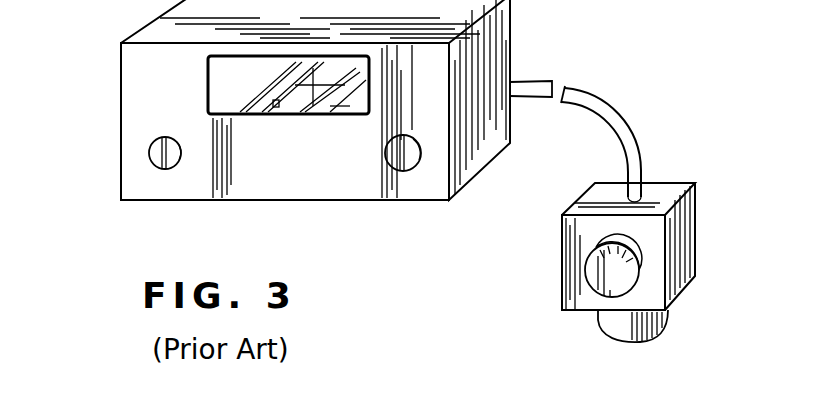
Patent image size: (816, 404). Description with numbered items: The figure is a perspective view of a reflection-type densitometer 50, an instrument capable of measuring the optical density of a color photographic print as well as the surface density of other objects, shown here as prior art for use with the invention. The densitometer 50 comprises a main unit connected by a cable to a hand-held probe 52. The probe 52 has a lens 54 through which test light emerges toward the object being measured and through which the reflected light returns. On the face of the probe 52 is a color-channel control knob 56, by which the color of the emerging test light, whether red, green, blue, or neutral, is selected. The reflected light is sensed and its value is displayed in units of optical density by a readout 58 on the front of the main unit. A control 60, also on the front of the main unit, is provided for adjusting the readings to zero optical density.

The reflection-type densitometer 50 is at (65, 94).
The probe 52 is at (698, 214).
The lens 54 is at (660, 338).
The color-channel control knob 56 is at (583, 283).
The readout 58 is at (257, 116).
The control 60 is at (148, 157).